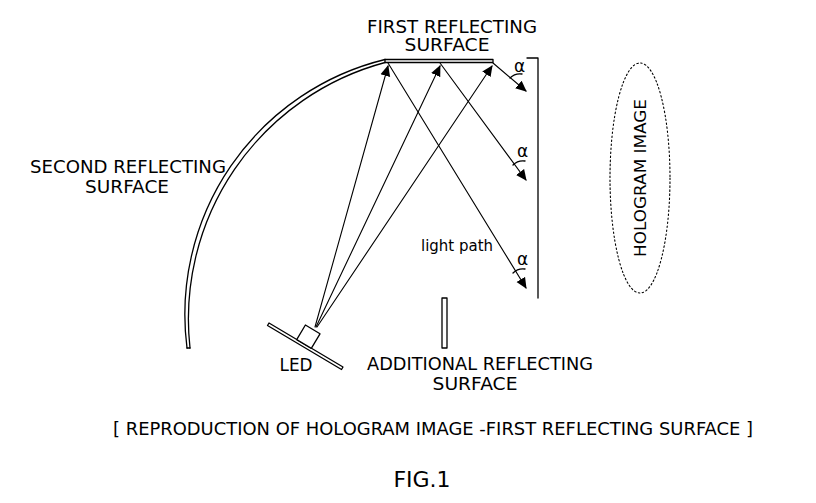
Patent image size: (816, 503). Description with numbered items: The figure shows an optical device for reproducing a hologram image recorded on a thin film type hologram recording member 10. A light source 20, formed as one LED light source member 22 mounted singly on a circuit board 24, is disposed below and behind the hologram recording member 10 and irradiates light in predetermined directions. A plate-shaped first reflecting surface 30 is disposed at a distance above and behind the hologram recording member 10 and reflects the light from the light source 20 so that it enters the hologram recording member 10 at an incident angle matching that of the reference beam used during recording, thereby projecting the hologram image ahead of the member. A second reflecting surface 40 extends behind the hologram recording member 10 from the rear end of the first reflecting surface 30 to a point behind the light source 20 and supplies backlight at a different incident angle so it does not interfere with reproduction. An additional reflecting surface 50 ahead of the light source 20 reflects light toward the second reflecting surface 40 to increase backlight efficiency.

The hologram recording member 10 is at (539, 63).
The light source 20 is at (347, 326).
The light source member 22 is at (323, 331).
The circuit board 24 is at (339, 354).
The first reflecting surface 30 is at (386, 58).
The second reflecting surface 40 is at (272, 122).
The additional reflecting surface 50 is at (448, 322).